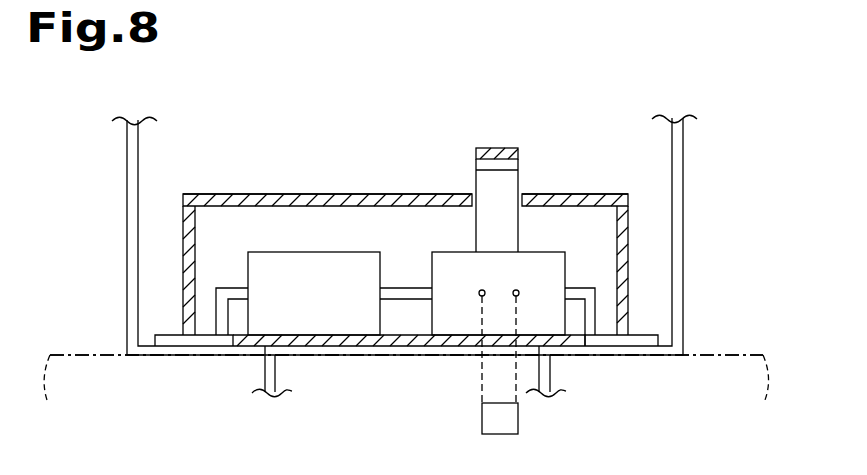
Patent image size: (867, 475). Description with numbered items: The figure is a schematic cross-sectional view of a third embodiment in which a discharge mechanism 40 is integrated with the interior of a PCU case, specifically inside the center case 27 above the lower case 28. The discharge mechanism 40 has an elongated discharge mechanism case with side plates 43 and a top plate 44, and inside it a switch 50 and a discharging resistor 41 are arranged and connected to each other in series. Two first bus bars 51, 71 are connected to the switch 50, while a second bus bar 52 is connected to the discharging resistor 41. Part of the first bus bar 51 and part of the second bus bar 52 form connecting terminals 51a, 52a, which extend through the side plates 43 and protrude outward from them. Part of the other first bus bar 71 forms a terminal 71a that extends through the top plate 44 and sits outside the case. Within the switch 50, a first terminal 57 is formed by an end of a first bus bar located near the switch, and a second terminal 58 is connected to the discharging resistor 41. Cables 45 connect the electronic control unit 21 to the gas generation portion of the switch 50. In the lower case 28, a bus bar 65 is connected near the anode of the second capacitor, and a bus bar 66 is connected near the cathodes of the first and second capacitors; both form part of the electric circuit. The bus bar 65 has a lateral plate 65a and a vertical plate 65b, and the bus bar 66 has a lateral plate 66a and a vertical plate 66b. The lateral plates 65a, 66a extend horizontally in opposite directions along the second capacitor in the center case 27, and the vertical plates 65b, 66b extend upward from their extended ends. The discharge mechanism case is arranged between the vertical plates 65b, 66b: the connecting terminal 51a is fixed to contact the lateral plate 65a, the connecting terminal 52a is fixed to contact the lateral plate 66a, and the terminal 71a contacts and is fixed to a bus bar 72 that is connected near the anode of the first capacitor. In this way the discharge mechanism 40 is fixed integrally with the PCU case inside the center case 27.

The electronic control unit 21 is at (500, 418).
The center case 27 is at (738, 233).
The lower case 28 is at (715, 352).
The discharge mechanism 40 is at (467, 164).
The discharging resistor 41 is at (362, 252).
The side plates 43 is at (183, 224).
The top plate 44 is at (270, 195).
The cables 45 is at (516, 380).
The switch 50 is at (523, 248).
The first bus bar 51 is at (661, 349).
The connecting terminal 51a is at (648, 336).
The second bus bar 52 is at (147, 345).
The connecting terminal 52a is at (168, 338).
The first terminal 57 is at (590, 282).
The second terminal 58 is at (407, 289).
The bus bar 65 is at (634, 368).
The lateral plate 65a is at (648, 374).
The vertical plate 65b is at (681, 334).
The bus bar 66 is at (180, 368).
The lateral plate 66a is at (166, 374).
The vertical plate 66b is at (128, 334).
The first bus bar 71 is at (528, 174).
The terminal 71a is at (515, 163).
The bus bar 72 is at (494, 148).